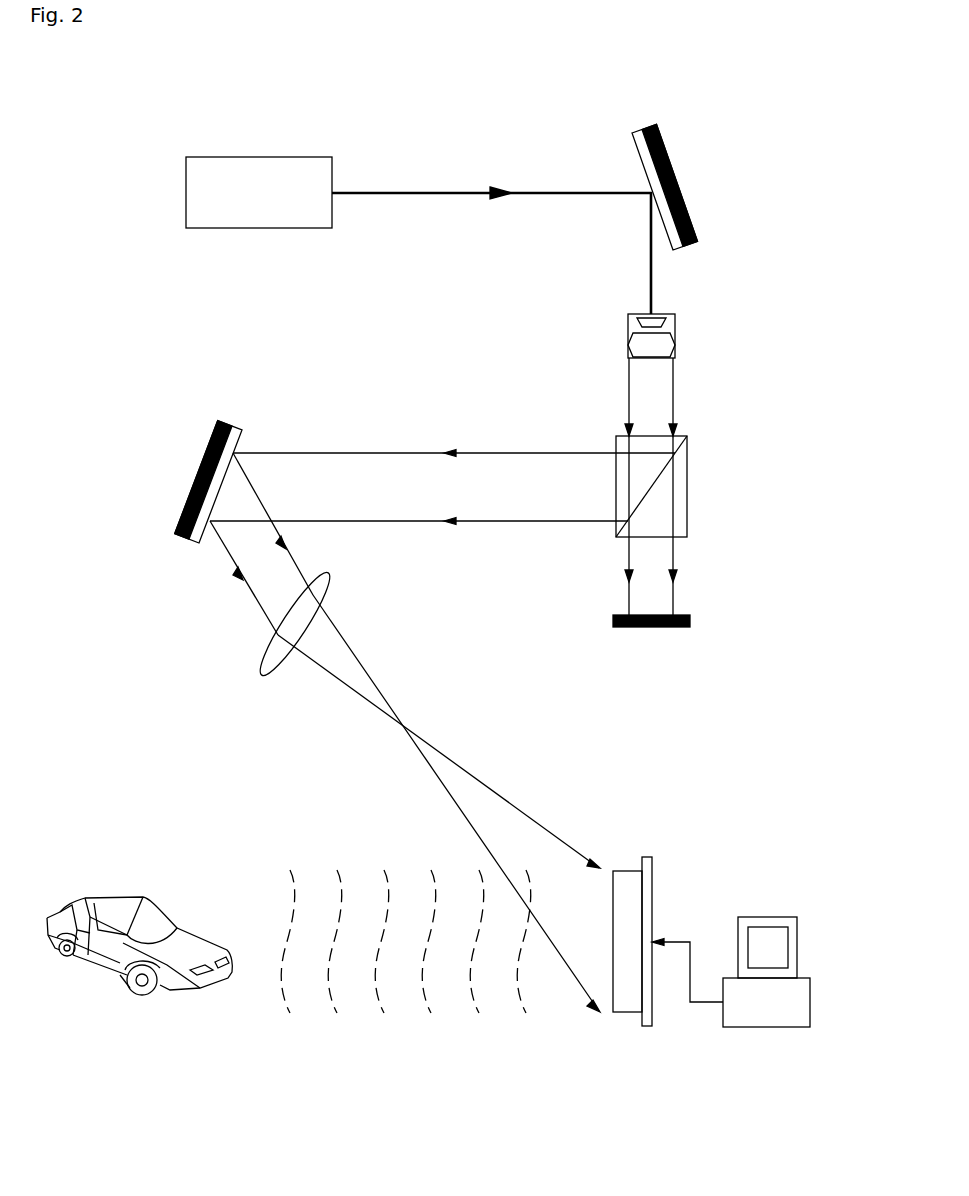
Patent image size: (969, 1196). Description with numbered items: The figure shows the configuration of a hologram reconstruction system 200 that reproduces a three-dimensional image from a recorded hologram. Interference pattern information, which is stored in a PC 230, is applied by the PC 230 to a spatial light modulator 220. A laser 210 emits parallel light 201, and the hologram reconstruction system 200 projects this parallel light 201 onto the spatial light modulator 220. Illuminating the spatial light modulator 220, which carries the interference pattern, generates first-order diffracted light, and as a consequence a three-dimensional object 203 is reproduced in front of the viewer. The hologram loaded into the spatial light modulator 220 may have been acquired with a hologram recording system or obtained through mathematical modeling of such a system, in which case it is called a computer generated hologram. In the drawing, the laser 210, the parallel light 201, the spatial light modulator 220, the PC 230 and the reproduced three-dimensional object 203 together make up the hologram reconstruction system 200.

The hologram reconstruction system 200 is at (495, 90).
The parallel light 201 is at (417, 196).
The 3D object 203 is at (117, 900).
The laser 210 is at (261, 157).
The spatial light modulator 220 is at (647, 857).
The PC 230 is at (767, 917).